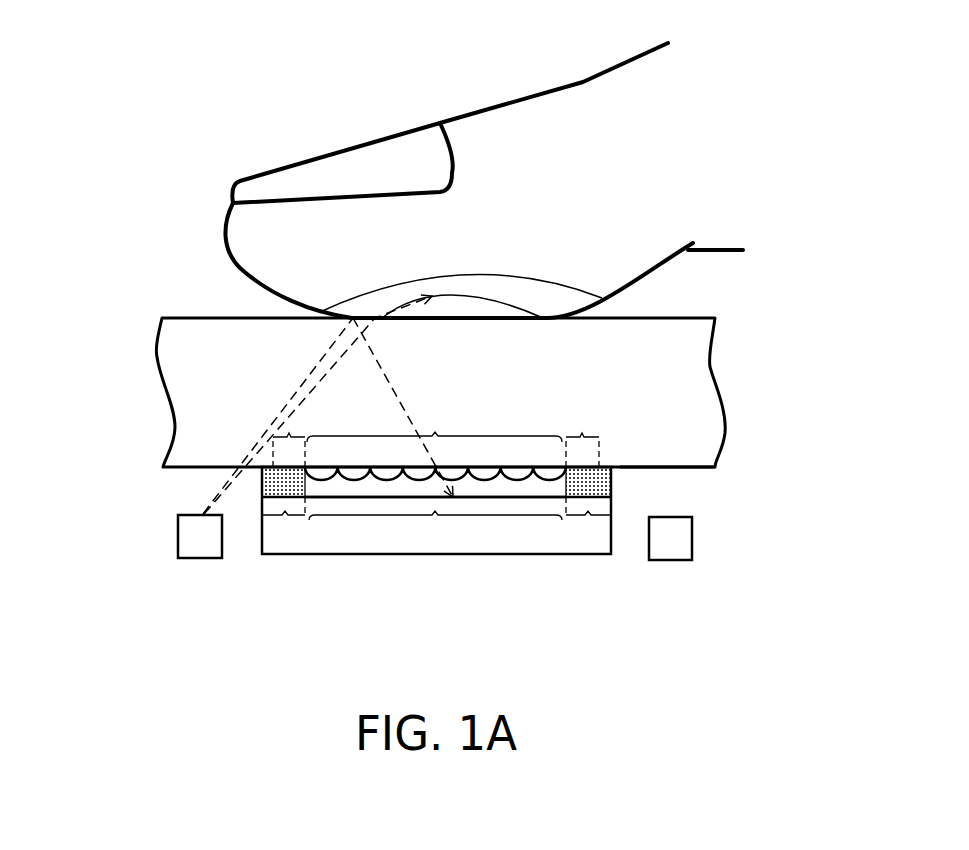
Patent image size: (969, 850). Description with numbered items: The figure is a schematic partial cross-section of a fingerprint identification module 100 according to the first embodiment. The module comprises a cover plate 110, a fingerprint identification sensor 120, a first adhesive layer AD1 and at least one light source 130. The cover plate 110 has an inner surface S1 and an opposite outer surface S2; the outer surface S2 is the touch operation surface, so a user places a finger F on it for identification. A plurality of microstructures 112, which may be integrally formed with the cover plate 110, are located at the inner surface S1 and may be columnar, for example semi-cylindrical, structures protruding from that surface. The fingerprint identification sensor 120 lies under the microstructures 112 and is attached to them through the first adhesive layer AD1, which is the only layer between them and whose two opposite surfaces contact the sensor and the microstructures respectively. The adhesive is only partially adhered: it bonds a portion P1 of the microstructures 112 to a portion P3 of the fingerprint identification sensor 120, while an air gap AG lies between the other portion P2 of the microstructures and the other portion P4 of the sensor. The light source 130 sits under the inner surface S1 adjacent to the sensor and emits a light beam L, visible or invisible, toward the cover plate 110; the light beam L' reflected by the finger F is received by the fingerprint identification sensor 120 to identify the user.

The finger F is at (545, 88).
The fingerprint identification module 100 is at (822, 678).
The cover plate 110 is at (675, 397).
The outer surface S2 is at (657, 318).
The inner surface S1 is at (697, 469).
The light beam L is at (317, 404).
The reflected light beam L' is at (403, 407).
The fingerprint identification sensor 120 is at (547, 543).
The microstructures 112 is at (485, 476).
The air gap AG is at (355, 487).
The first adhesive layer AD1 is at (262, 488).
The portion of the microstructures P1 is at (438, 433).
The other portion of the microstructures P2 is at (434, 421).
The portion of the fingerprint identification sensor P3 is at (436, 526).
The other portion of the fingerprint identification sensor P4 is at (435, 533).
The light source 130 is at (190, 537).